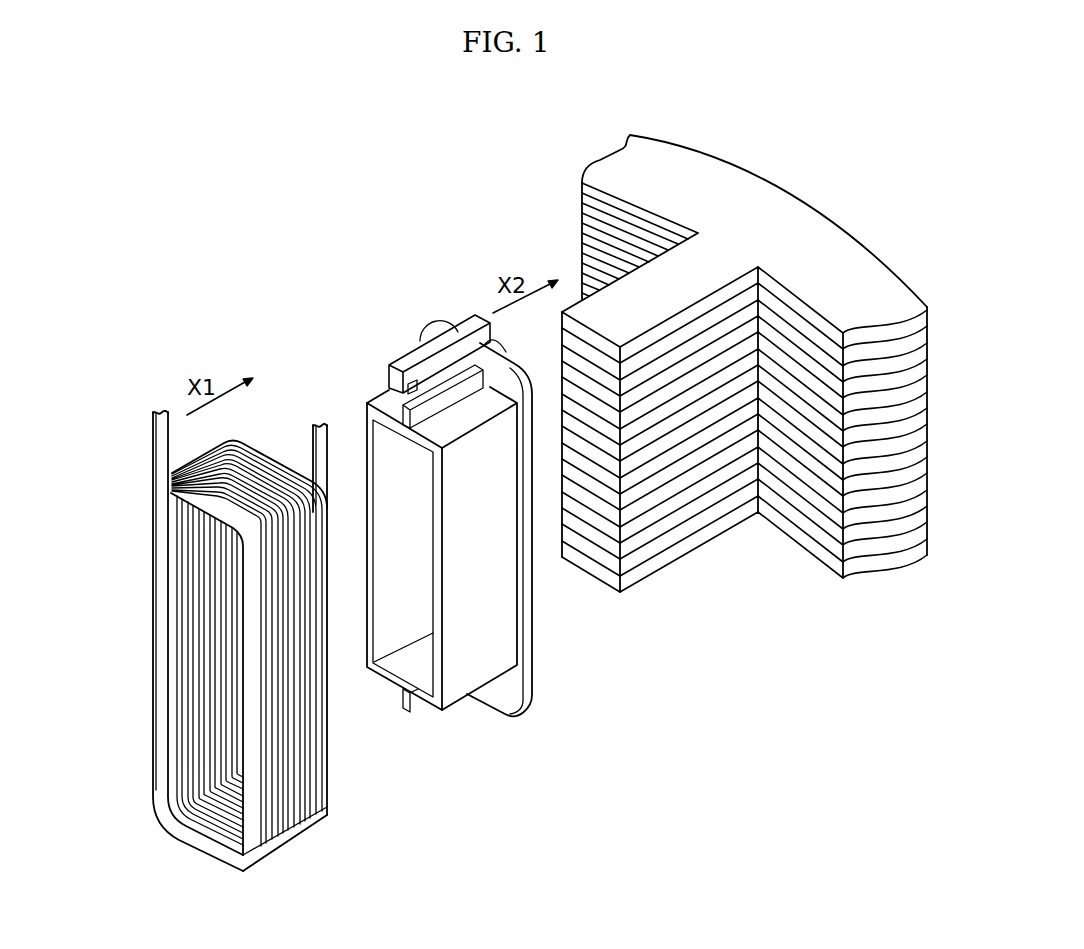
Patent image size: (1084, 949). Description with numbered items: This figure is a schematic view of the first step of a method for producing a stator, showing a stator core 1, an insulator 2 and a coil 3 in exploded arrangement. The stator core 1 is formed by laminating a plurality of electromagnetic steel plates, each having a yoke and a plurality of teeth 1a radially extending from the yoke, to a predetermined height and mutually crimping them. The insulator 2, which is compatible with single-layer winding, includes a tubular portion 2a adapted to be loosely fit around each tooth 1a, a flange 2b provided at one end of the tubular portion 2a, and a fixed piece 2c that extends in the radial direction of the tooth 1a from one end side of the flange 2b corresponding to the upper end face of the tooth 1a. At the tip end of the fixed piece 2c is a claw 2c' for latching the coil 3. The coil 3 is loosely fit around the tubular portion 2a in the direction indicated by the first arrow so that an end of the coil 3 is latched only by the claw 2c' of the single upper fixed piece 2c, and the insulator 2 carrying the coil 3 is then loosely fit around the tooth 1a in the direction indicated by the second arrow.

The stator core 1 is at (744, 422).
The tooth 1a is at (678, 510).
The insulator 2 is at (481, 548).
The tubular portion 2a is at (480, 636).
The flange 2b is at (507, 688).
The fixed piece 2c is at (439, 336).
The claw 2c' is at (392, 352).
The coil 3 is at (158, 657).